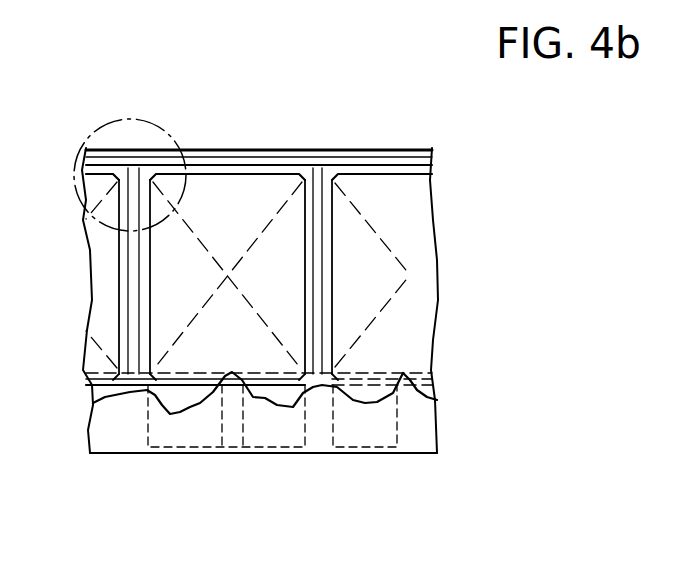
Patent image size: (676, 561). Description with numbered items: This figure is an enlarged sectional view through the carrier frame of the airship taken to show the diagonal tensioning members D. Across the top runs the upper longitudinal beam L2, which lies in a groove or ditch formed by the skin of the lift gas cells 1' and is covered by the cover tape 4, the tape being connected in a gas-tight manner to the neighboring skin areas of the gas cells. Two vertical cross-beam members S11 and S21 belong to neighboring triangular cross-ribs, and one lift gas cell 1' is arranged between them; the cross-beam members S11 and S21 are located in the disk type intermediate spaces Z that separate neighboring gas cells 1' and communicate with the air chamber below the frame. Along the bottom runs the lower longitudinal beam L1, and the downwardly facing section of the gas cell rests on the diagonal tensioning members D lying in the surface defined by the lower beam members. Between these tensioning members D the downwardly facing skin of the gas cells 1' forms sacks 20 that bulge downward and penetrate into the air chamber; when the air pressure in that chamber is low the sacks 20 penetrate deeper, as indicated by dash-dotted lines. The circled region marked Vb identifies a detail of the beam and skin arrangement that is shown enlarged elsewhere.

The cover tape 4 is at (383, 150).
The longitudinal beam L2 is at (265, 162).
The cross-beam member S11 is at (134, 176).
The cross-beam member S21 is at (318, 170).
The longitudinal beam L1 is at (152, 392).
The diagonal tensioning members D is at (262, 228).
The sacks 20 is at (169, 408).
The intermediate space Z is at (123, 283).
The lift gas cell 1' is at (309, 334).
The detail circle Vb is at (102, 125).